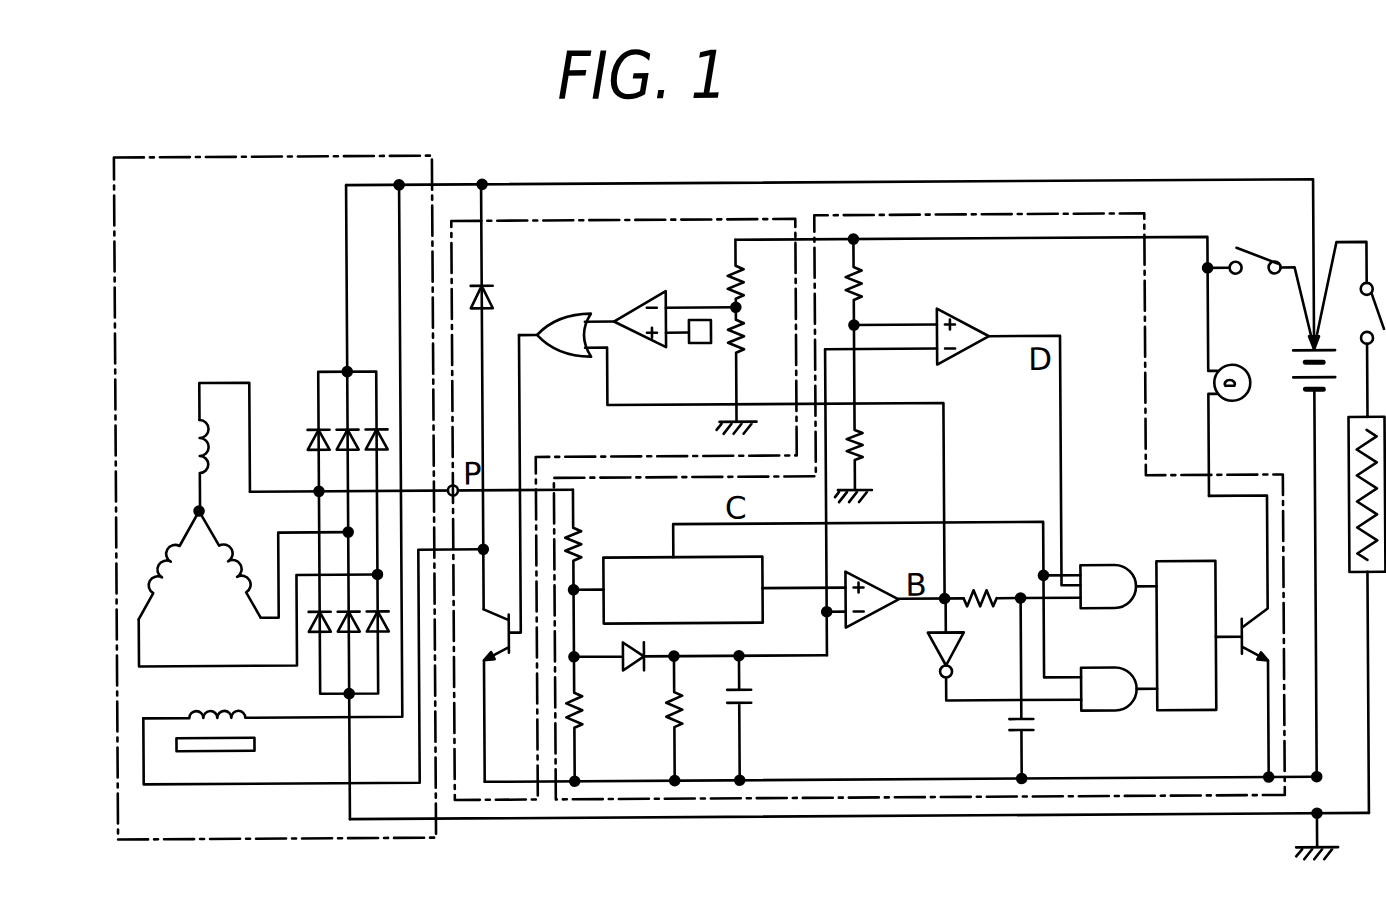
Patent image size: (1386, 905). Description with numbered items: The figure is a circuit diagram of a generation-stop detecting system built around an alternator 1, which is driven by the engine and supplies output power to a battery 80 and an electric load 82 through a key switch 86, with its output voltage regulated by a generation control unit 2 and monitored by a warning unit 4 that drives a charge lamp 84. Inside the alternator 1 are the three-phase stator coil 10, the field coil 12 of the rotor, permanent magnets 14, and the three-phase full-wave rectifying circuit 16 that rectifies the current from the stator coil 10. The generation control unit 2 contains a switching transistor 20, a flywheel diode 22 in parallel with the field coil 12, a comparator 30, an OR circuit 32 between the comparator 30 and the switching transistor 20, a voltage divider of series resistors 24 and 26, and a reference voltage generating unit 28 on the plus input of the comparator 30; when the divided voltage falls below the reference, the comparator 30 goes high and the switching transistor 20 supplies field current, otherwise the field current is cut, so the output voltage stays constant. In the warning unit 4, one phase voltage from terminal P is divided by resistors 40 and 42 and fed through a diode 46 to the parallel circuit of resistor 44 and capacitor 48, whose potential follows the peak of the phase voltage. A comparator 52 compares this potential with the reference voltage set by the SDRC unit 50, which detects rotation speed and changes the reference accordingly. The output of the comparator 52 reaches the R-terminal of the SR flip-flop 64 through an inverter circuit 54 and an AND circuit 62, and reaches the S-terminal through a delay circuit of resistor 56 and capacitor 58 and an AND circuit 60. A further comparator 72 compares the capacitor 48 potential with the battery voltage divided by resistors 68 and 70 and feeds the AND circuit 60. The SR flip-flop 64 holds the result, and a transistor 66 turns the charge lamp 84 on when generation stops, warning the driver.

The alternator 1 is at (437, 166).
The generation control unit 2 is at (707, 217).
The warning unit 4 is at (1148, 222).
The three-phase stator coil 10 is at (189, 433).
The field coil 12 is at (222, 707).
The permanent magnets 14 is at (253, 746).
The three-phase full-wave rectifying circuit 16 is at (305, 373).
The switching transistor 20 is at (520, 658).
The flywheel diode 22 is at (485, 285).
The resistor 24 is at (743, 270).
The resistor 26 is at (743, 340).
The reference voltage generating unit 28 is at (703, 344).
The comparator 30 is at (658, 295).
The OR circuit 32 is at (572, 314).
The resistor 40 is at (580, 545).
The resistor 42 is at (582, 710).
The resistor 44 is at (683, 700).
The diode 46 is at (636, 671).
The capacitor 48 is at (752, 700).
The SDRC unit 50 is at (643, 557).
The comparator 52 is at (868, 582).
The inverter circuit 54 is at (928, 647).
The resistor 56 is at (982, 595).
The capacitor 58 is at (1004, 721).
The AND circuit 60 is at (1100, 566).
The AND circuit 62 is at (1093, 713).
The S-R flip-flop circuit 64 is at (1182, 563).
The transistor 66 is at (1256, 666).
The resistor 68 is at (866, 283).
The resistor 70 is at (866, 433).
The comparator 72 is at (962, 326).
The battery 80 is at (1290, 368).
The electric load 82 is at (1349, 564).
The charge lamp 84 is at (1238, 404).
The key switch 86 is at (1248, 257).